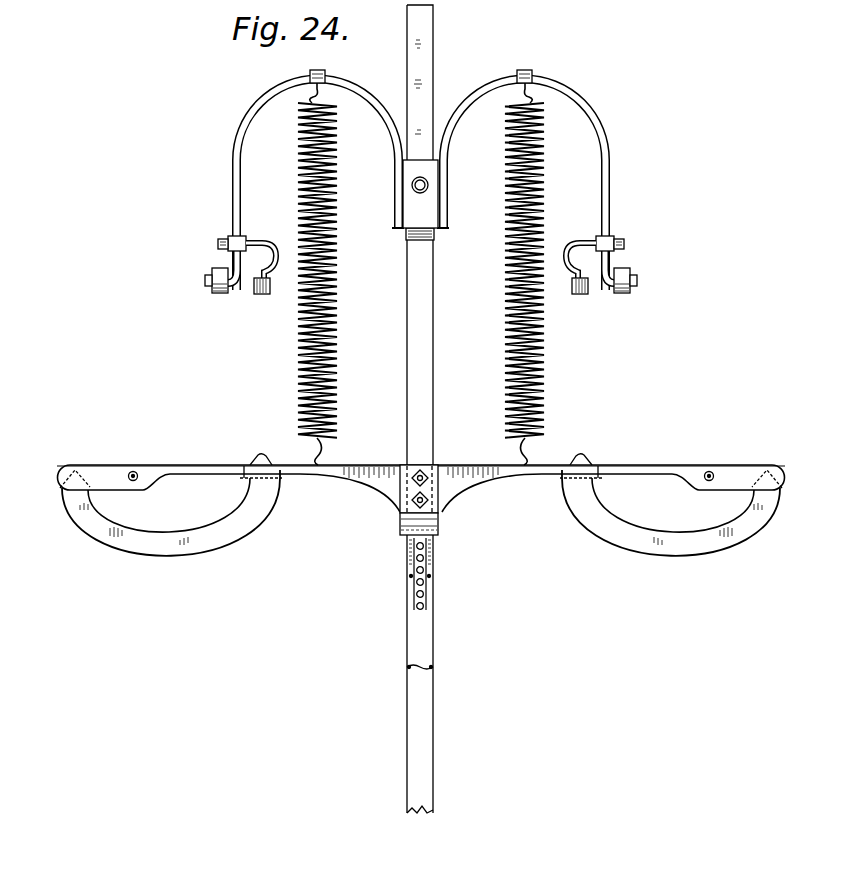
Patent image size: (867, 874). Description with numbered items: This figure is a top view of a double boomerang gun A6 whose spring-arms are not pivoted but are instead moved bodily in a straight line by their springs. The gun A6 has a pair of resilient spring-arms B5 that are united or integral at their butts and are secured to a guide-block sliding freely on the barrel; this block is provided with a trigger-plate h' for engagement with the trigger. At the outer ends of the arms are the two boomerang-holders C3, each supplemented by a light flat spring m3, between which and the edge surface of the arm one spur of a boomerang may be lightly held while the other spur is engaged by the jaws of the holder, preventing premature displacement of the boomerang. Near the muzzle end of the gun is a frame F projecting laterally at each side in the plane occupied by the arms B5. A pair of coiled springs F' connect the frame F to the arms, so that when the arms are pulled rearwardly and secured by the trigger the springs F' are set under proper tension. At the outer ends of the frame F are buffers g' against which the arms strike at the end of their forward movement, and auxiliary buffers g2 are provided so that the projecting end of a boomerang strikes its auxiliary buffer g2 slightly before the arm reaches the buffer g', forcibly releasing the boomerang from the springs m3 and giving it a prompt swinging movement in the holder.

The frame F is at (400, 194).
The coiled springs F' is at (431, 274).
The buffers g' is at (423, 281).
The auxiliary buffers g2 is at (580, 296).
The light flat spring m3 is at (592, 470).
The resilient spring-arms B5 is at (421, 486).
The boomerang-holders C3 is at (421, 497).
The trigger-plate h' is at (438, 574).
The gun A6 is at (397, 409).